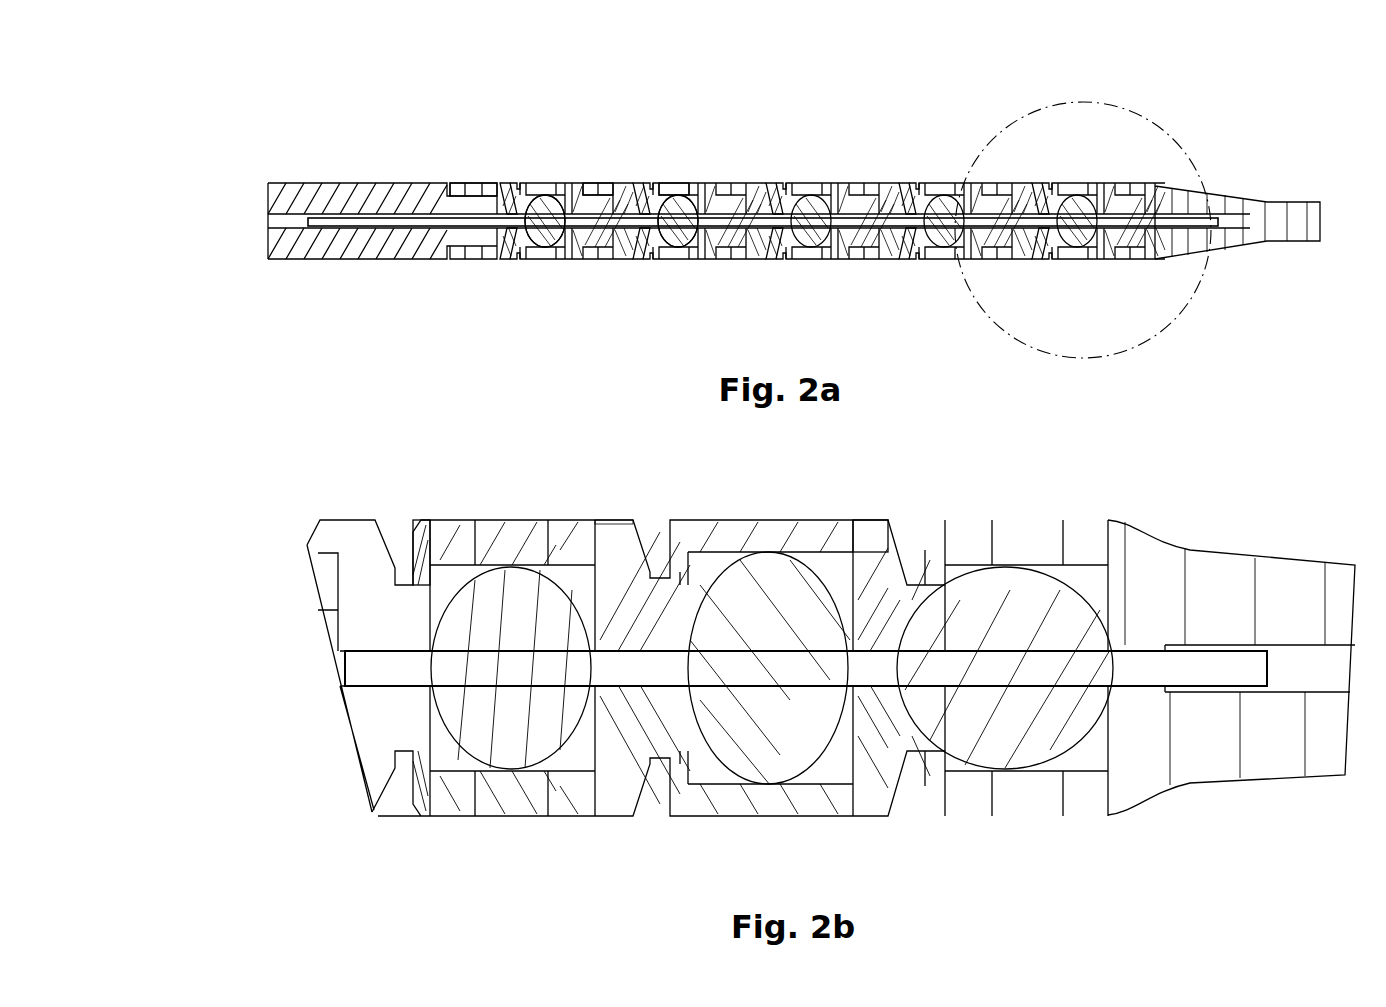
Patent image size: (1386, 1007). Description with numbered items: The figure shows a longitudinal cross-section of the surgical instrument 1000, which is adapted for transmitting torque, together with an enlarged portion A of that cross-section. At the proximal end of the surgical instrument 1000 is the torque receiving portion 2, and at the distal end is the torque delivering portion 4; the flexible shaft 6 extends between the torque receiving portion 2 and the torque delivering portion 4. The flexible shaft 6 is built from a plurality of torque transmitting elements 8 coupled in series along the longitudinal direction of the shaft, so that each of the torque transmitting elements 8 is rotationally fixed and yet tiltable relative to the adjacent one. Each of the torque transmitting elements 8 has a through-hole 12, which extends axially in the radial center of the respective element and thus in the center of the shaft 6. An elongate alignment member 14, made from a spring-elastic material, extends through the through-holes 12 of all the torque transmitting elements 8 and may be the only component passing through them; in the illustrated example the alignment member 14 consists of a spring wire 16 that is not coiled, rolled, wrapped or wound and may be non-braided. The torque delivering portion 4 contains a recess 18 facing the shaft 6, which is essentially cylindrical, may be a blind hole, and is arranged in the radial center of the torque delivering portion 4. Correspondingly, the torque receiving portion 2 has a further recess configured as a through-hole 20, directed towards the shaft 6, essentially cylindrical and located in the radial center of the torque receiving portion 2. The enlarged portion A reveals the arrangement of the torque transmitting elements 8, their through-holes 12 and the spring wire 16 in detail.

In FIG. 2A, the surgical instrument 1000 is at (344, 334).
In FIG. 2A, the torque receiving portion 2 is at (336, 150).
In FIG. 2A, the torque delivering portion 4 is at (1227, 156).
In FIG. 2A, the flexible shaft 6 is at (770, 129).
In FIG. 2A, the torque transmitting elements 8 is at (722, 258).
In FIG. 2B, the torque transmitting elements 8 is at (755, 805).
In FIG. 2A, the through-hole 12 is at (680, 183).
In FIG. 2B, the through-hole 12 is at (880, 588).
In FIG. 2A, the elongate alignment member 14 is at (904, 212).
In FIG. 2B, the elongate alignment member 14 is at (1235, 668).
In FIG. 2B, the spring wire 16 is at (350, 665).
In FIG. 2A, the recess 18 is at (1214, 232).
In FIG. 2B, the recess 18 is at (1294, 606).
In FIG. 2A, the through-hole 20 is at (250, 185).
In FIG. 2A, the enlarged portion A is at (1180, 326).